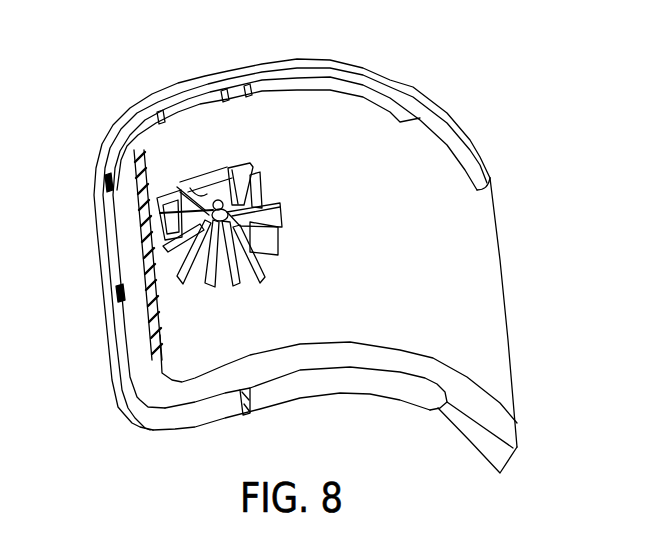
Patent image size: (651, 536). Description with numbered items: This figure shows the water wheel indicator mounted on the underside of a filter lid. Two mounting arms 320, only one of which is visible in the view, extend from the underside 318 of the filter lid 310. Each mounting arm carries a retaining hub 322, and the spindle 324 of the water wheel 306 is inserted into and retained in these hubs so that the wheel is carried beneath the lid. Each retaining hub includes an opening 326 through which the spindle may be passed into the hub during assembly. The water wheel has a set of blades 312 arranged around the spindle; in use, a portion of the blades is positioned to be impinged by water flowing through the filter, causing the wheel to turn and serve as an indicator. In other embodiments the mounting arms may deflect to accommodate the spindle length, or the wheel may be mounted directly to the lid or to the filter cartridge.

The water wheel 306 is at (268, 211).
The filter lid 310 is at (230, 95).
The blades 312 is at (200, 252).
The underside 318 is at (317, 268).
The mounting arms 320 is at (190, 188).
The retaining hub 322 is at (212, 213).
The spindle 324 is at (220, 200).
The opening 326 is at (240, 262).